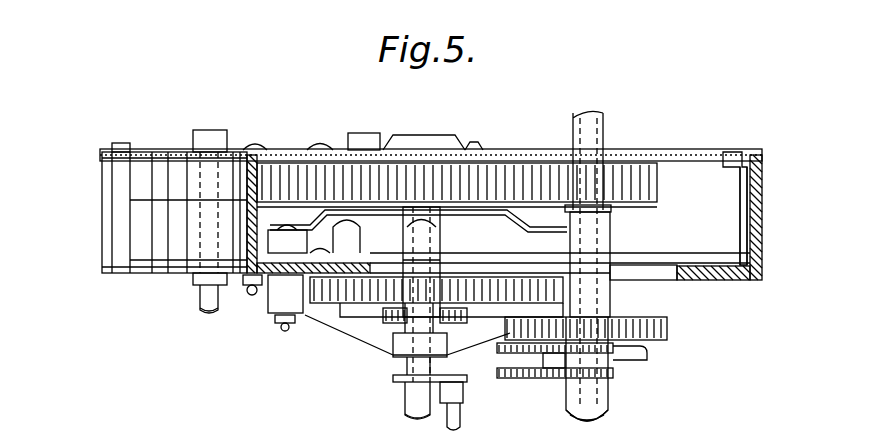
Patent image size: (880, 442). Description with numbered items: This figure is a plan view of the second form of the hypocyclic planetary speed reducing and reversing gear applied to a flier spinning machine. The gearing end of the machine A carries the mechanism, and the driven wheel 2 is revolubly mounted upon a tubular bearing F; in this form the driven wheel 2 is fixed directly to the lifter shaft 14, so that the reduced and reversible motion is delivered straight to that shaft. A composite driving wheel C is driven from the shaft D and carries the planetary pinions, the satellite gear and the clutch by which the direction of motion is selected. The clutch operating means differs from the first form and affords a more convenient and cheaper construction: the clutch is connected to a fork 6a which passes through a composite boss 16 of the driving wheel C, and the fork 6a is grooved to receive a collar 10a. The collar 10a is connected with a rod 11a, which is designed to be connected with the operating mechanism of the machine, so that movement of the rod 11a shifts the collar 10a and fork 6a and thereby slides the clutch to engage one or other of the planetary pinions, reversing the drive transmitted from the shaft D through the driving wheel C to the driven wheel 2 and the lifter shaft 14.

The gearing end of the machine A is at (513, 151).
The tubular bearing F is at (323, 204).
The shaft D is at (595, 135).
The driven wheel 2 is at (515, 223).
The composite driving wheel C is at (325, 305).
The composite boss 16 is at (397, 340).
The fork 6a is at (413, 360).
The lifter shaft 14 is at (415, 400).
The collar 10a is at (458, 390).
The rod 11a is at (457, 418).